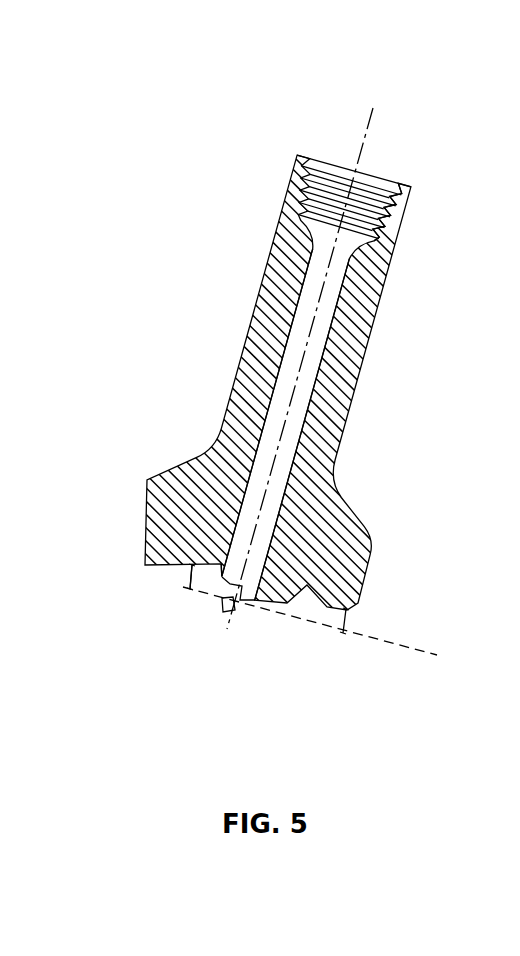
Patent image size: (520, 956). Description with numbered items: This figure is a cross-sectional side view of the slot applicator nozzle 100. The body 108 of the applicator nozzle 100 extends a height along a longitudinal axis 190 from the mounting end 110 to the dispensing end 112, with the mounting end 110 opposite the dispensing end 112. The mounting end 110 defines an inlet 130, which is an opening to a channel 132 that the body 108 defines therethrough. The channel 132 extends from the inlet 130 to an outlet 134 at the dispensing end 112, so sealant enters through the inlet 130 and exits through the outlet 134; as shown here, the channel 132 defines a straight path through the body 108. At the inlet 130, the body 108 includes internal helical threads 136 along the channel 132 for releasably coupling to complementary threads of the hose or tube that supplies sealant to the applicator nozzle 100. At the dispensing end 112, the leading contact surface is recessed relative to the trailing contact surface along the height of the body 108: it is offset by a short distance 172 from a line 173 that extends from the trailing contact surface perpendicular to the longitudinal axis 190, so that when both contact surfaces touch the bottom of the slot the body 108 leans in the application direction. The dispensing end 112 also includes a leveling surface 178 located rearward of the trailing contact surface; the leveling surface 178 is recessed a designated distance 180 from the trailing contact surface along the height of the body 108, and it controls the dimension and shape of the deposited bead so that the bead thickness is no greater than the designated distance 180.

The applicator nozzle 100 is at (260, 390).
The body 108 is at (249, 347).
The mounting end 110 is at (414, 184).
The dispensing end 112 is at (256, 640).
The inlet 130 is at (331, 180).
The channel 132 is at (313, 386).
The outlet 134 is at (222, 578).
The internal helical threads 136 is at (383, 183).
The short distance 172 is at (348, 620).
The line 173 is at (395, 644).
The leveling surface 178 is at (158, 566).
The designated distance 180 is at (188, 578).
The longitudinal axis 190 is at (375, 111).